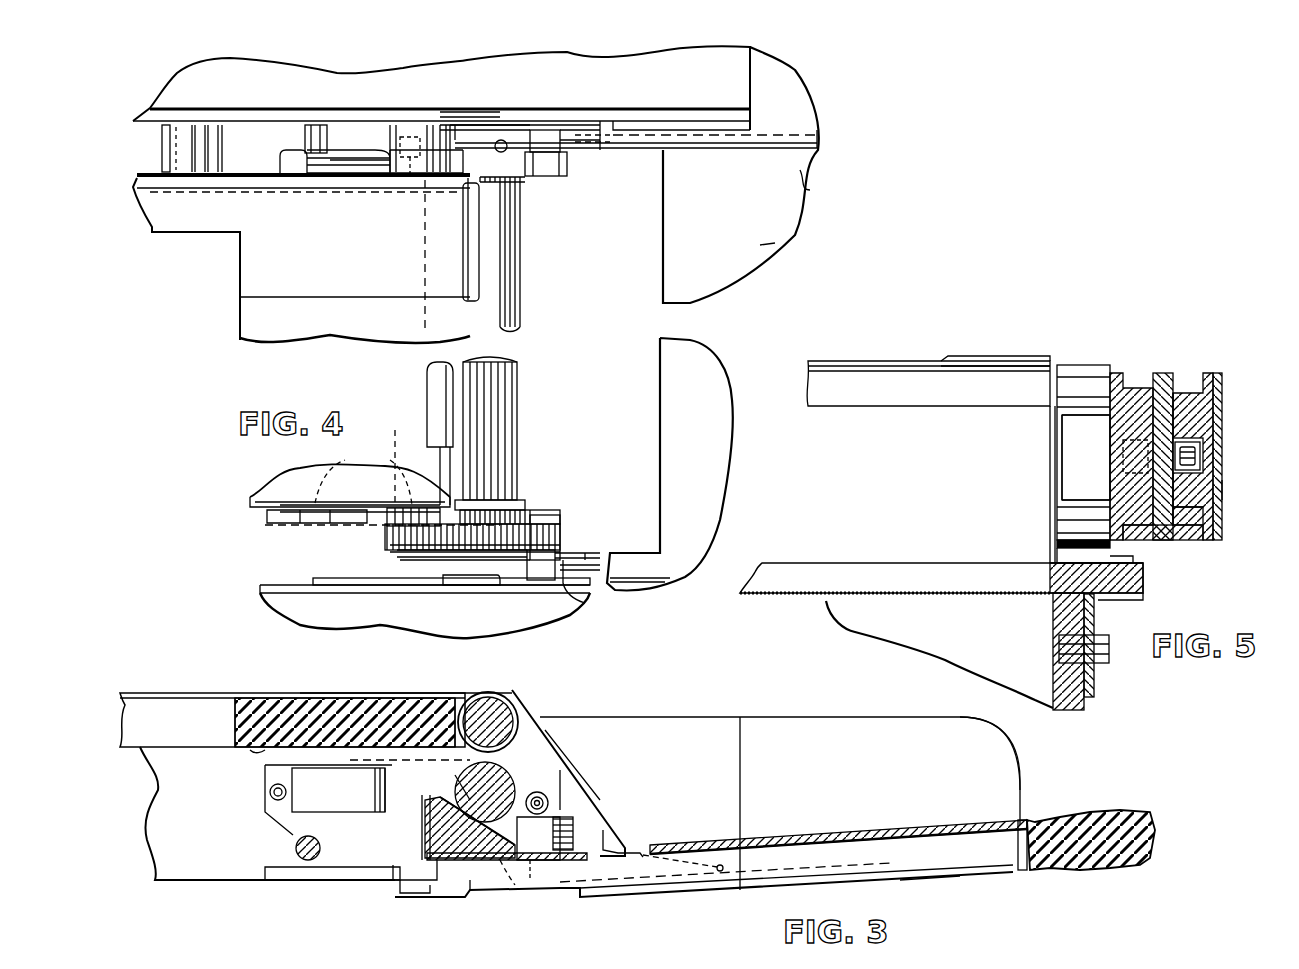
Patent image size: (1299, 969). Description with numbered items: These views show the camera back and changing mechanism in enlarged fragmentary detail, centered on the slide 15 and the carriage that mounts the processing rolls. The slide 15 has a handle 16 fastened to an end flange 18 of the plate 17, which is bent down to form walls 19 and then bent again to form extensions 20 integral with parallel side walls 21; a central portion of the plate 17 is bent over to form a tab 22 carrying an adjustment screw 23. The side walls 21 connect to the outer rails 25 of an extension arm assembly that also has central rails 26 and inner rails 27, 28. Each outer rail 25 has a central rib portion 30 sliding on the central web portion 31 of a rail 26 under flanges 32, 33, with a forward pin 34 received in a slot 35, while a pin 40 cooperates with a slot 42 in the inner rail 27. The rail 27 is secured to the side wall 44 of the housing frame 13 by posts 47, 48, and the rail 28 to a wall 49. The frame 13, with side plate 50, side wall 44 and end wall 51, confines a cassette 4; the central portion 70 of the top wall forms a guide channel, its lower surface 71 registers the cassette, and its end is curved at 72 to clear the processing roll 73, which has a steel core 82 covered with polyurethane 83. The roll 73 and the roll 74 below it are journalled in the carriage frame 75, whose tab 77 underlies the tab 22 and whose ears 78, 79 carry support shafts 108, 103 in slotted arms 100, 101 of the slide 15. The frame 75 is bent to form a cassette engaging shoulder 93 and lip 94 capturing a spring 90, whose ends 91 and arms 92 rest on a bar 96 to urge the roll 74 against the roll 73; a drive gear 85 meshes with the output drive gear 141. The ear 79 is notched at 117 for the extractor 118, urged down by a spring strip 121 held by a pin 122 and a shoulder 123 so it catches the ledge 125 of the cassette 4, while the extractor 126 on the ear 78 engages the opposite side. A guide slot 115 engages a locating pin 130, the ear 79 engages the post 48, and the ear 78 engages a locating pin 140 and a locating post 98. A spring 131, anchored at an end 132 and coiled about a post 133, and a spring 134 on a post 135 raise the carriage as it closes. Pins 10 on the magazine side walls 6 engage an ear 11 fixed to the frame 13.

In FIG. 4, the cassette 4 is at (303, 477).
In FIG. 5, the side walls 6 is at (1055, 679).
In FIG. 5, the pins 10 is at (1110, 647).
In FIG. 5, the ear 11 is at (1087, 681).
In FIG. 5, the housing frame 13 is at (1143, 576).
In FIG. 3, the housing frame 13 is at (181, 680).
In FIG. 3, the slide 15 is at (961, 898).
In FIG. 3, the handle 16 is at (1122, 827).
In FIG. 4, the plate 17 is at (760, 245).
In FIG. 3, the plate 17 is at (873, 825).
In FIG. 3, the end flange 18 is at (1017, 853).
In FIG. 4, the walls 19 is at (800, 183).
In FIG. 3, the walls 19 is at (912, 870).
In FIG. 4, the extensions 20 is at (800, 112).
In FIG. 5, the side walls 21 is at (1222, 490).
In FIG. 3, the side walls 21 is at (820, 733).
In FIG. 3, the tab 22 is at (573, 832).
In FIG. 3, the adjustment screw 23 is at (563, 815).
In FIG. 5, the outer rails 25 is at (1212, 373).
In FIG. 4, the central rails 26 is at (743, 62).
In FIG. 5, the central rails 26 is at (1159, 363).
In FIG. 4, the inner rail 27 is at (660, 115).
In FIG. 5, the inner rail 27 is at (1117, 372).
In FIG. 3, the inner rail 27 is at (678, 730).
In FIG. 4, the inner rail 28 is at (290, 593).
In FIG. 5, the central rib portion 30 is at (1187, 388).
In FIG. 5, the central web portion 31 is at (1175, 508).
In FIG. 5, the flange 32 is at (1173, 372).
In FIG. 5, the flange 33 is at (1193, 540).
In FIG. 5, the forward pin 34 is at (1200, 442).
In FIG. 5, the slot 35 is at (1200, 470).
In FIG. 5, the pin 40 is at (1120, 458).
In FIG. 5, the slot 42 is at (1106, 428).
In FIG. 4, the side wall 44 is at (238, 187).
In FIG. 4, the post 47 is at (168, 157).
In FIG. 5, the post 47 is at (1093, 550).
In FIG. 4, the post 48 is at (410, 130).
In FIG. 5, the post 48 is at (1069, 365).
In FIG. 3, the post 48 is at (413, 763).
In FIG. 4, the wall 49 is at (327, 577).
In FIG. 4, the side plate 50 is at (245, 515).
In FIG. 4, the end wall 51 is at (262, 268).
In FIG. 5, the end wall 51 is at (960, 358).
In FIG. 3, the end wall 51 is at (382, 690).
In FIG. 4, the central portion of the top wall 70 is at (262, 322).
In FIG. 5, the central portion of the top wall 70 is at (841, 361).
In FIG. 3, the central portion of the top wall 70 is at (290, 700).
In FIG. 5, the lower surface 71 is at (941, 410).
In FIG. 3, the lower surface 71 is at (260, 753).
In FIG. 3, the curved end 72 is at (470, 703).
In FIG. 4, the processing roll 73 is at (531, 296).
In FIG. 3, the processing roll 73 is at (534, 733).
In FIG. 3, the processing roll 74 is at (529, 768).
In FIG. 4, the frame 75 is at (415, 400).
In FIG. 3, the frame 75 is at (412, 866).
In FIG. 3, the tab 77 is at (588, 876).
In FIG. 4, the ear 78 is at (281, 496).
In FIG. 4, the ear 79 is at (347, 168).
In FIG. 3, the ear 79 is at (333, 860).
In FIG. 3, the core 82 is at (513, 718).
In FIG. 3, the polyurethane covering 83 is at (497, 710).
In FIG. 4, the drive gear 85 is at (540, 522).
In FIG. 4, the spring 90 is at (460, 467).
In FIG. 4, the ends 91 is at (457, 487).
In FIG. 3, the ends 91 is at (460, 763).
In FIG. 3, the arms 92 is at (540, 857).
In FIG. 3, the cassette engaging shoulder 93 is at (427, 813).
In FIG. 4, the lip 94 is at (435, 383).
In FIG. 3, the lip 94 is at (452, 795).
In FIG. 3, the bar 96 is at (515, 843).
In FIG. 4, the locating post 98 is at (410, 508).
In FIG. 4, the arm 100 is at (500, 152).
In FIG. 4, the arm 101 is at (582, 552).
In FIG. 4, the support shaft 103 is at (550, 127).
In FIG. 4, the support shaft 108 is at (563, 583).
In FIG. 3, the guide slot 115 is at (293, 838).
In FIG. 3, the notch 117 is at (393, 800).
In FIG. 4, the extractor 118 is at (403, 187).
In FIG. 3, the extractor 118 is at (357, 797).
In FIG. 4, the spring strip 121 is at (360, 150).
In FIG. 4, the pin 122 is at (295, 152).
In FIG. 4, the shoulder 123 is at (567, 152).
In FIG. 4, the ledge 125 is at (394, 442).
In FIG. 4, the extractor 126 is at (385, 470).
In FIG. 4, the locating pin 130 is at (313, 132).
In FIG. 3, the locating pin 130 is at (296, 848).
In FIG. 4, the spring 131 is at (600, 133).
In FIG. 4, the end 132 is at (758, 135).
In FIG. 3, the end 132 is at (720, 871).
In FIG. 4, the post 133 is at (455, 130).
In FIG. 3, the post 133 is at (483, 867).
In FIG. 4, the spring 134 is at (663, 580).
In FIG. 4, the post 135 is at (487, 568).
In FIG. 4, the locating pin 140 is at (258, 513).
In FIG. 4, the output drive gear 141 is at (420, 533).